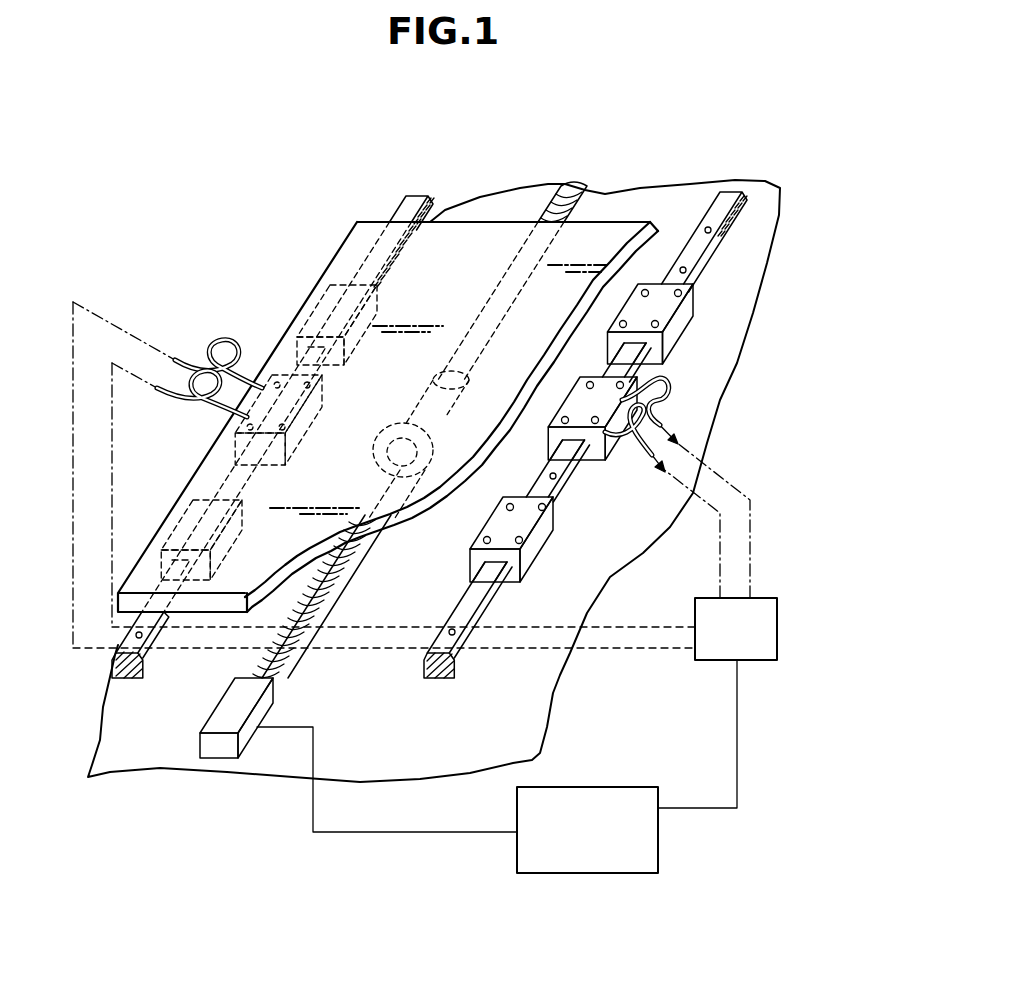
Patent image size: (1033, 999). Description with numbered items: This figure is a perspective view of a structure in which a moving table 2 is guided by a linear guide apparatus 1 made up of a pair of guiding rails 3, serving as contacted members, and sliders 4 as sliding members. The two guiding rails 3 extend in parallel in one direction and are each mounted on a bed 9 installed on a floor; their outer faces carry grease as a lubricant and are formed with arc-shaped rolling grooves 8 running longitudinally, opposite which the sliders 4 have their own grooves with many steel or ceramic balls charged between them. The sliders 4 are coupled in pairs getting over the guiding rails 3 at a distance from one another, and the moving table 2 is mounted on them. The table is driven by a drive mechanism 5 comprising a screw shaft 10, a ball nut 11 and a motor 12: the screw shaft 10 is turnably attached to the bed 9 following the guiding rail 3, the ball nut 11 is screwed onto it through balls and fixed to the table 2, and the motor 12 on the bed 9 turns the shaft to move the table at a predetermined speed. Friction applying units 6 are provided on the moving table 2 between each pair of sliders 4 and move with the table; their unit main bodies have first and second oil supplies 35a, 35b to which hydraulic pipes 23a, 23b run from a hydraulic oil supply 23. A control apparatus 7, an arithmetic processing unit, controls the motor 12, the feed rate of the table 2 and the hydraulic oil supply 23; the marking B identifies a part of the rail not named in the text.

The linear guide apparatus 1 is at (659, 278).
The moving table 2 is at (356, 220).
The guiding rail 3 is at (414, 200).
The slider 4 is at (694, 335).
The drive mechanism 5 is at (329, 620).
The friction applying unit 6 is at (562, 395).
The control apparatus 7 is at (658, 844).
The rolling groove 8 is at (426, 215).
The bed 9 is at (612, 200).
The screw shaft 10 is at (342, 574).
The ball nut 11 is at (415, 477).
The motor 12 is at (274, 701).
The hydraulic oil supply 23 is at (757, 663).
The hydraulic pipe 23a is at (165, 396).
The hydraulic pipe 23b is at (177, 358).
The first oil supply 35a is at (602, 460).
The second oil supply 35b is at (670, 380).
The scale B is at (745, 197).